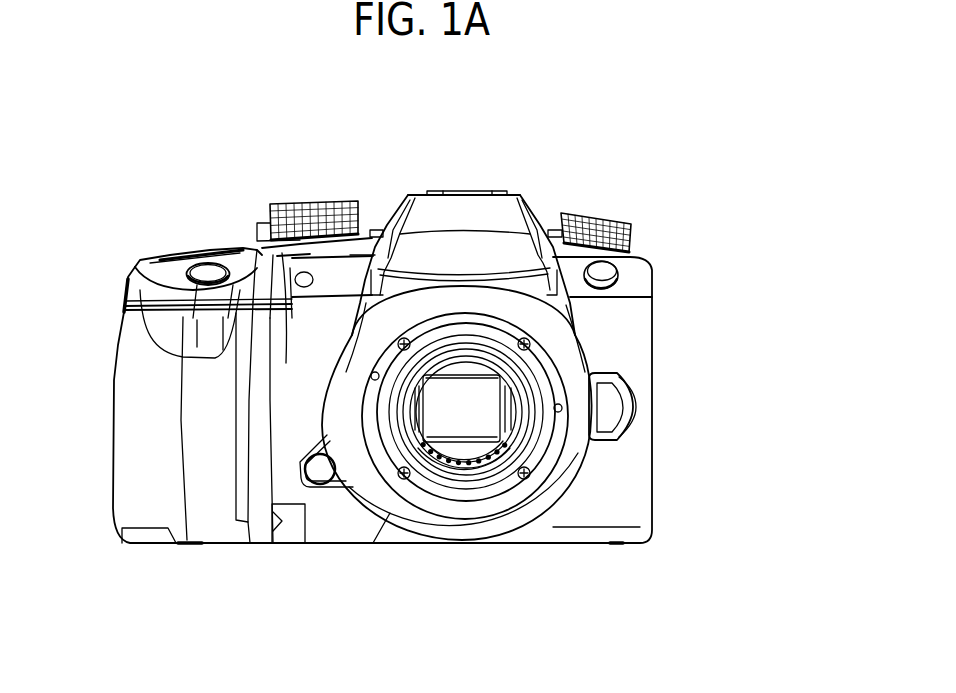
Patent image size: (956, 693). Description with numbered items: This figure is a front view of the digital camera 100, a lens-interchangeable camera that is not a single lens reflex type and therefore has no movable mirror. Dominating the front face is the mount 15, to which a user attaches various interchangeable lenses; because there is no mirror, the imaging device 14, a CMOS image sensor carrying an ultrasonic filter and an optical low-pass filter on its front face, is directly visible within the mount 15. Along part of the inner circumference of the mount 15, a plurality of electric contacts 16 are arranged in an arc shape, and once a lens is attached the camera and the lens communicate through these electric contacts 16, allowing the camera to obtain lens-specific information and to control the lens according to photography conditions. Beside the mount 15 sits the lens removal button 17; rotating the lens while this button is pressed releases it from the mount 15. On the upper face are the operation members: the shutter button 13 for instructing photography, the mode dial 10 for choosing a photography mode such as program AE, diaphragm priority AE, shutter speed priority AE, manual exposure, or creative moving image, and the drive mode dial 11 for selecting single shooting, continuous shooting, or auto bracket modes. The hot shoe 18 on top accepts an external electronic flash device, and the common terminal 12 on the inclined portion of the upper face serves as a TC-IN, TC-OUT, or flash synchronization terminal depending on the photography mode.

The digital camera 100 is at (518, 185).
The mode dial 10 is at (357, 201).
The drive mode dial 11 is at (628, 222).
The common terminal 12 is at (619, 273).
The shutter button 13 is at (205, 272).
The imaging device 14 is at (443, 420).
The mount 15 is at (542, 458).
The electric contacts 16 is at (453, 470).
The lens removal button 17 is at (634, 410).
The hot shoe 18 is at (468, 191).